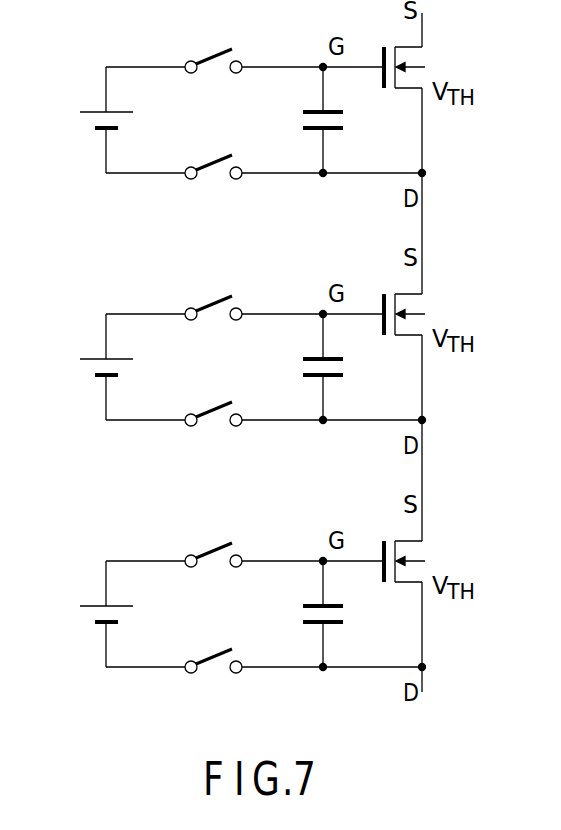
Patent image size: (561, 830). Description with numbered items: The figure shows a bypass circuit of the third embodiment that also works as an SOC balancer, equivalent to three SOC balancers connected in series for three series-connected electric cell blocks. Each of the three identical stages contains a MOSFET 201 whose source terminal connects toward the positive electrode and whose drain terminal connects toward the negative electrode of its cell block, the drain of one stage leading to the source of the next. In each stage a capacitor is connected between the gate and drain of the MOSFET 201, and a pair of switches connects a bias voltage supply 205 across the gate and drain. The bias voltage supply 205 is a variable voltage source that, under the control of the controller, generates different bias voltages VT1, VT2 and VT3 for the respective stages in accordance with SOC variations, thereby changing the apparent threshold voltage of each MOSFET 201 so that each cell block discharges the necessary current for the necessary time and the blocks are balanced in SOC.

The MOSFET 201 is at (432, 60).
The bias voltage supply 205 is at (82, 406).
The bias voltage VT1 is at (77, 183).
The bias voltage VT2 is at (82, 406).
The bias voltage VT3 is at (82, 653).